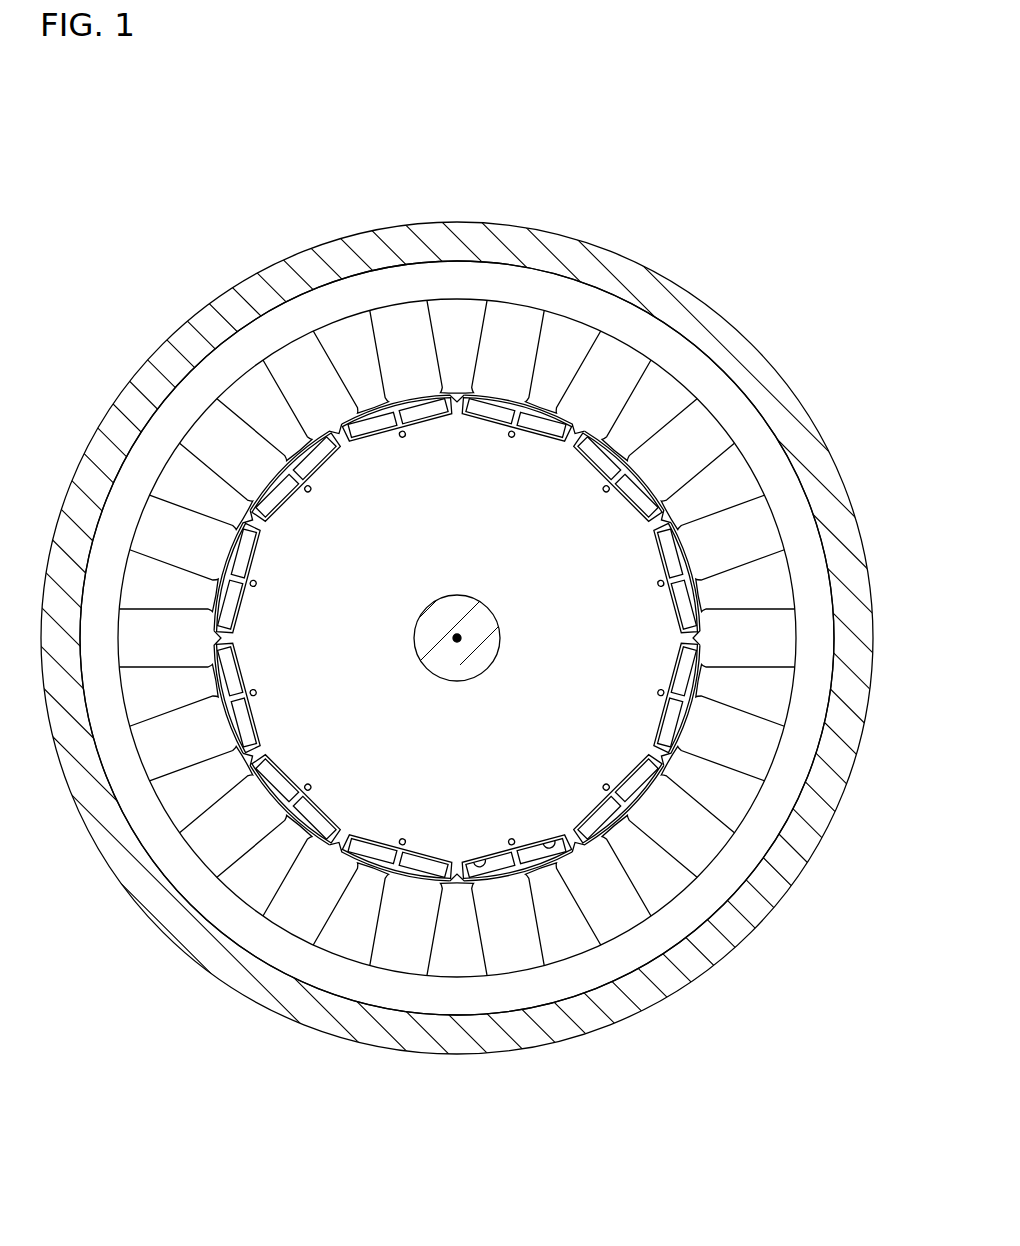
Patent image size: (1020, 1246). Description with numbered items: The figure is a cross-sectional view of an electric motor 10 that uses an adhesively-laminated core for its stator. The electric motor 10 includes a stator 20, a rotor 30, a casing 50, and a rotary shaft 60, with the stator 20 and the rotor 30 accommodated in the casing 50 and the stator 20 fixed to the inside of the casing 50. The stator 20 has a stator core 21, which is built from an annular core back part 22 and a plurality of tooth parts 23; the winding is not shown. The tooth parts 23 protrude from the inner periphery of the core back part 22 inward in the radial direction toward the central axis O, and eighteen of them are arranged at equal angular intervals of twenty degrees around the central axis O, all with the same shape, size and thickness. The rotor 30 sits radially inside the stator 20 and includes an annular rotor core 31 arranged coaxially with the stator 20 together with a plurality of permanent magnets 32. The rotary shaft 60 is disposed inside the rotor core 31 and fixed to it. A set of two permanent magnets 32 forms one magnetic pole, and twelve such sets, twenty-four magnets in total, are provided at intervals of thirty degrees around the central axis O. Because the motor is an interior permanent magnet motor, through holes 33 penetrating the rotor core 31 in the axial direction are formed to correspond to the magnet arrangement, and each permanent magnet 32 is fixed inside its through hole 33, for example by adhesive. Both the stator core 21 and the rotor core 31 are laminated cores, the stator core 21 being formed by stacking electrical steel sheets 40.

The electric motor 10 is at (756, 130).
The stator 20 is at (745, 387).
The stator core 21 is at (682, 187).
The core back part 22 is at (647, 325).
The tooth parts 23 is at (600, 365).
The rotor 30 is at (275, 636).
The rotor core 31 is at (358, 828).
The permanent magnets 32 is at (540, 432).
The through holes 33 is at (483, 862).
The electrical steel sheets 40 is at (240, 352).
The casing 50 is at (793, 435).
The rotary shaft 60 is at (488, 655).
The central axis O is at (459, 636).